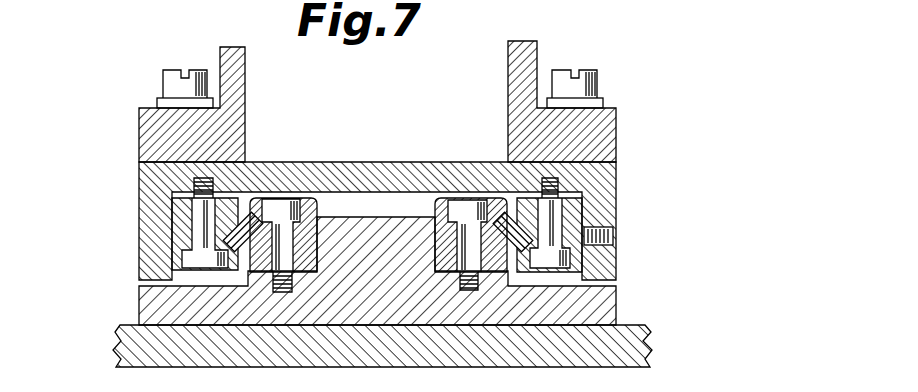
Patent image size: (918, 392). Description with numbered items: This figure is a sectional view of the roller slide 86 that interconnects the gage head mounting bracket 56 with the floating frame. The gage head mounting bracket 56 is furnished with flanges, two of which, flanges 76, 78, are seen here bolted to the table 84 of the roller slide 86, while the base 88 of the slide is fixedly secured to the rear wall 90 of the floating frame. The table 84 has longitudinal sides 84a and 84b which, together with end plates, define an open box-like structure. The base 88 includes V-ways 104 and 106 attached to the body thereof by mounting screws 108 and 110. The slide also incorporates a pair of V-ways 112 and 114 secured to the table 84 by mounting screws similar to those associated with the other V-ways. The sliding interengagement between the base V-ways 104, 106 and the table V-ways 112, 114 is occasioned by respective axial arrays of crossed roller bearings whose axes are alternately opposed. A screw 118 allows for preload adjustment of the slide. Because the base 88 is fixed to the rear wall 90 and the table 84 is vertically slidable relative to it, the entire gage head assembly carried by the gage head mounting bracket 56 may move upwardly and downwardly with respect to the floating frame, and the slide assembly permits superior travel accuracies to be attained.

The gage head mounting bracket 56 is at (228, 57).
The flange 76 is at (152, 122).
The flange 78 is at (575, 125).
The table 84 is at (380, 177).
The longitudinal side 84a is at (158, 212).
The longitudinal side 84b is at (618, 190).
The roller slide 86 is at (408, 195).
The base 88 is at (597, 300).
The rear wall 90 is at (625, 343).
The V-way 104 is at (330, 212).
The V-way 106 is at (448, 237).
The mounting screw 108 is at (278, 210).
The mounting screw 110 is at (466, 208).
The V-way 112 is at (180, 222).
The V-way 114 is at (567, 205).
The screw 118 is at (602, 235).